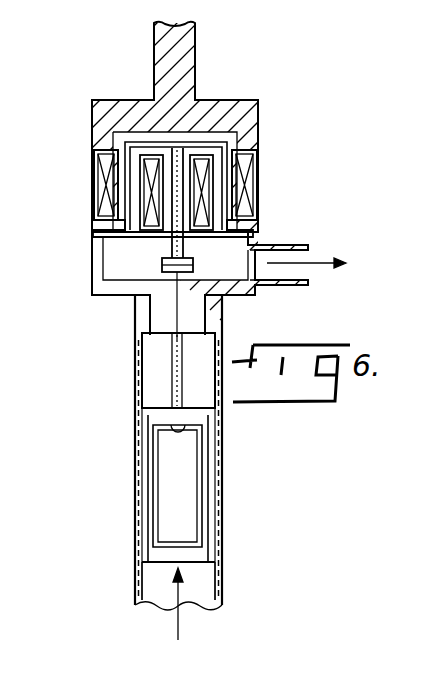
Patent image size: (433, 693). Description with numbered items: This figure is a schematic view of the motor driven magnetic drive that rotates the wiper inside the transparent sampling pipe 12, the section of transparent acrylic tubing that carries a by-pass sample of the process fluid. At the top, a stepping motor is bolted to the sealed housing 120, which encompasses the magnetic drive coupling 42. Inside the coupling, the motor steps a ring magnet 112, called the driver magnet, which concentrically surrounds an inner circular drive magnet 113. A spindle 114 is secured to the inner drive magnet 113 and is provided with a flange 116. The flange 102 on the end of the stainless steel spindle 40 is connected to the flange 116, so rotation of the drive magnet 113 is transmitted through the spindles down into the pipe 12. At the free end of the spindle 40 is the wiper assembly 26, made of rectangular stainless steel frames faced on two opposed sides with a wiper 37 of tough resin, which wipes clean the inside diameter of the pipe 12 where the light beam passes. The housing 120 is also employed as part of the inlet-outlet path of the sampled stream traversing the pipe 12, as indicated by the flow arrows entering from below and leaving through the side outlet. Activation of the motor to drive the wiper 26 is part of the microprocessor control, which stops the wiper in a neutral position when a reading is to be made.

The magnetic drive coupling 42 is at (262, 141).
The ring magnet 112 is at (105, 185).
The inner circular drive magnet 113 is at (208, 181).
The spindle 114 is at (161, 254).
The flange 116 is at (193, 260).
The housing 120 is at (92, 262).
The flange 102 is at (134, 308).
The spindle 40 is at (173, 372).
The wiper 37 is at (150, 511).
The wiper assembly 26 is at (140, 588).
The transparent pipe 12 is at (224, 590).